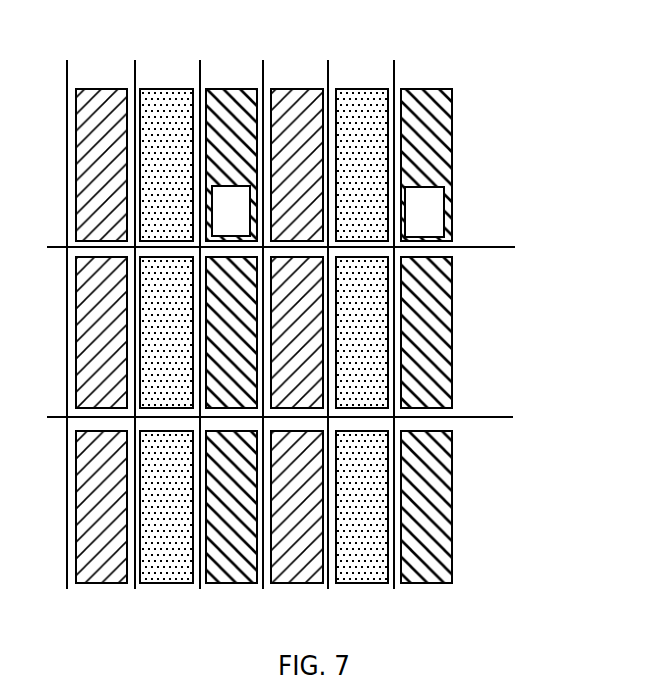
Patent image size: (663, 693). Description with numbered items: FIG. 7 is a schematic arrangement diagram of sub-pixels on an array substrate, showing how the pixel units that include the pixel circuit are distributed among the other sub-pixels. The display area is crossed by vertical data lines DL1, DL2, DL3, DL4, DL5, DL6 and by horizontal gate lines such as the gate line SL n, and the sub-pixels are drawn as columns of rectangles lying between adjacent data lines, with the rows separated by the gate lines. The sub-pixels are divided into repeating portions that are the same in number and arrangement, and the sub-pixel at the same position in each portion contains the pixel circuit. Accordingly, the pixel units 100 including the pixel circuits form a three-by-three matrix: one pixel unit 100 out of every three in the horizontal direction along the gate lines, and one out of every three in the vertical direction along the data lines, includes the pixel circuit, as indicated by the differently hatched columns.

The pixel unit 100 is at (222, 100).
The data line DL1 is at (70, 336).
The data line DL2 is at (138, 336).
The data line DL3 is at (205, 336).
The data line DL4 is at (267, 336).
The data line DL5 is at (329, 336).
The data line DL6 is at (391, 336).
The gate line SL n is at (310, 249).